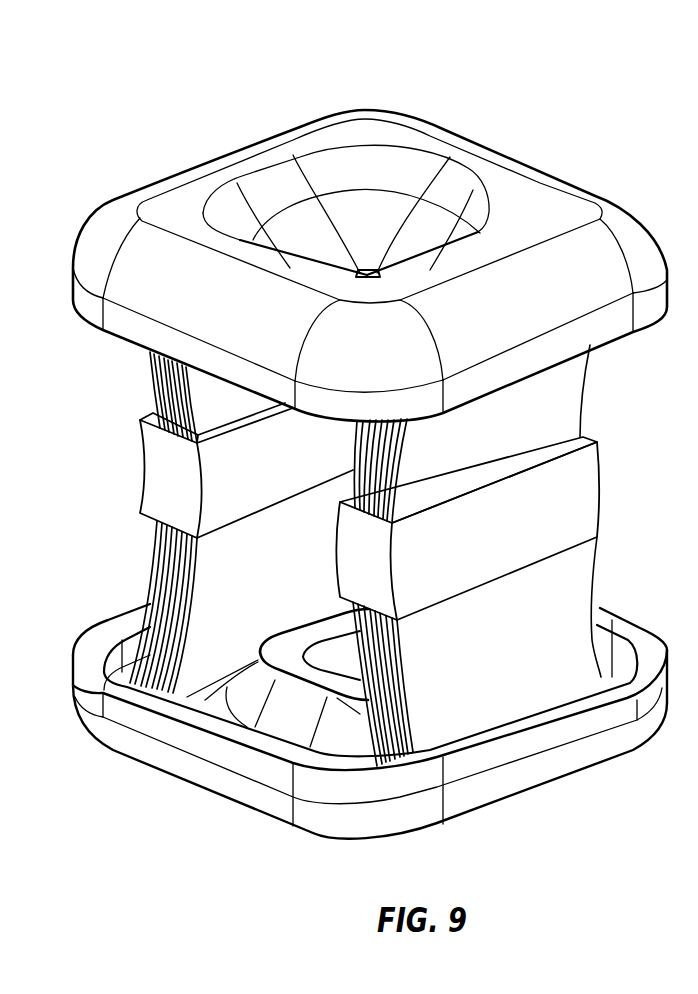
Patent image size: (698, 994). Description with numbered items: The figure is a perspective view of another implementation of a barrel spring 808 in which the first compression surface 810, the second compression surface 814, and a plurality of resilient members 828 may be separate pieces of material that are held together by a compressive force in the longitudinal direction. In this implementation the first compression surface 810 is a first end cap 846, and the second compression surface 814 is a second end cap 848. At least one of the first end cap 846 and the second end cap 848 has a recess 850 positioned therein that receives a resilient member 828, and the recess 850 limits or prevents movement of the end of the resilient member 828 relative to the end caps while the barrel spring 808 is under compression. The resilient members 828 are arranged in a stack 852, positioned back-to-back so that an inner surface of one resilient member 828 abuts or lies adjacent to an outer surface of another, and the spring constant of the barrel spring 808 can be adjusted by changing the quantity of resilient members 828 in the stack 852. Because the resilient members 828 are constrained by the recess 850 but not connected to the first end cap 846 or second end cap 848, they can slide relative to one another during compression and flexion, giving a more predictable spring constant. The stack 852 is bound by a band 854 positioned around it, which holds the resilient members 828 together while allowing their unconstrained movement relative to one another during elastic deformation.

The barrel spring 808 is at (620, 63).
The first compression surface 810 is at (424, 140).
The second compression surface 814 is at (455, 820).
The resilient member 828 is at (573, 387).
The first end cap 846 is at (567, 293).
The second end cap 848 is at (520, 750).
The recess 850 is at (618, 645).
The stack 852 is at (358, 714).
The band 854 is at (573, 497).